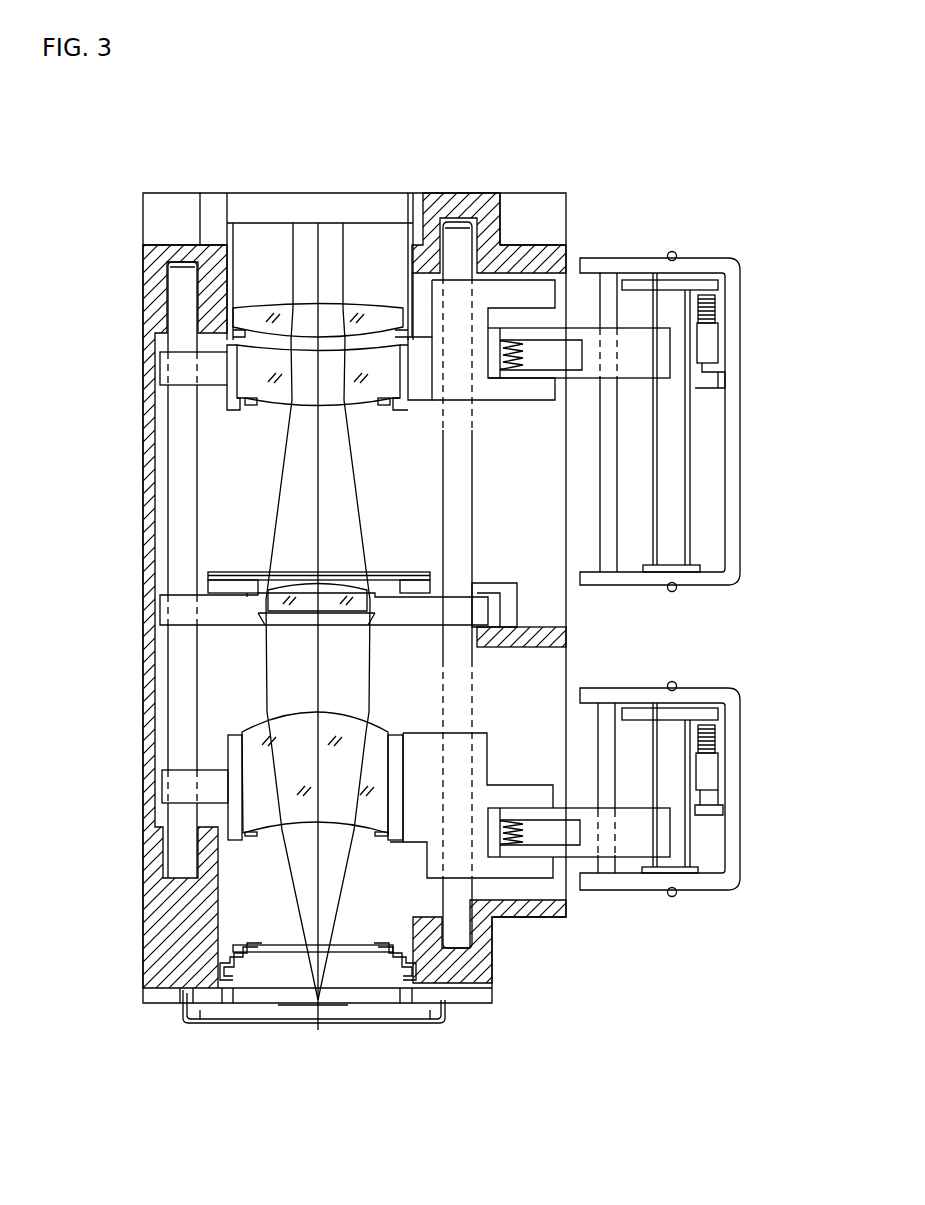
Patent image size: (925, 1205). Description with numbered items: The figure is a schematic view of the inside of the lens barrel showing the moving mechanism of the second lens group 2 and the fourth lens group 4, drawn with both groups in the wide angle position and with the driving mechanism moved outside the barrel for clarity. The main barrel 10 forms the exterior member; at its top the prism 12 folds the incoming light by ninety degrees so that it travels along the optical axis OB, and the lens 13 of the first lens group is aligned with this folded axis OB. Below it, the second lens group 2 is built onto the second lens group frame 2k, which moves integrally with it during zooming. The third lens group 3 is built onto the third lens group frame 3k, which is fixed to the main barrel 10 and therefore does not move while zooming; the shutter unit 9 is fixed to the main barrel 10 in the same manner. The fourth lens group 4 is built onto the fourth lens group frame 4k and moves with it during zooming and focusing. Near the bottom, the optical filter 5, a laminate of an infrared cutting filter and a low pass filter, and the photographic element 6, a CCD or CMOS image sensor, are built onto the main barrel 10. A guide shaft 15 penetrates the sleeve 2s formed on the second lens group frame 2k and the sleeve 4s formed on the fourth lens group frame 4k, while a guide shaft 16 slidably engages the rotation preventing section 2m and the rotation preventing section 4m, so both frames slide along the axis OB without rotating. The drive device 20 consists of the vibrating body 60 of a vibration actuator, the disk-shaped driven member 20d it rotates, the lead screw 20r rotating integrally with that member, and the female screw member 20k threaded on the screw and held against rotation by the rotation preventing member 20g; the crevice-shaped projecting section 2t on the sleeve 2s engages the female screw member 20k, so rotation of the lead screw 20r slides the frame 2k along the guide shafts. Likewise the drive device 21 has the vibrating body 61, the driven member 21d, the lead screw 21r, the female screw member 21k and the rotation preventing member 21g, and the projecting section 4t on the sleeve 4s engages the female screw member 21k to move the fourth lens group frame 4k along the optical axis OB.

The main barrel 10 is at (152, 270).
The prism 12 is at (264, 235).
The lens 13 is at (350, 302).
The guide shaft 15 is at (466, 246).
The sleeve 2s is at (465, 297).
The guide shaft 16 is at (180, 343).
The rotation preventing section 2m is at (180, 375).
The second lens group 2 is at (278, 402).
The second lens group frame 2k is at (423, 400).
The projecting section 2t is at (520, 395).
The optical axis OB is at (320, 485).
The shutter unit 9 is at (232, 583).
The third lens group frame 3k is at (237, 625).
The third lens group 3 is at (293, 611).
The fourth lens group 4 is at (275, 822).
The rotation preventing section 4m is at (180, 790).
The fourth lens group frame 4k is at (395, 840).
The projecting section 4t is at (528, 790).
The sleeve 4s is at (458, 863).
The drive device 20 is at (755, 250).
The rotation preventing member 20g is at (608, 563).
The driven member 20d is at (682, 283).
The lead screw 20r is at (686, 480).
The vibrating body 60 is at (712, 338).
The female screw member 20k is at (633, 345).
The drive device 21 is at (755, 688).
The rotation preventing member 21g is at (607, 870).
The driven member 21d is at (682, 710).
The lead screw 21r is at (680, 862).
The vibrating body 61 is at (712, 773).
The female screw member 21k is at (650, 830).
The optical filter 5 is at (345, 947).
The photographic element 6 is at (362, 1019).